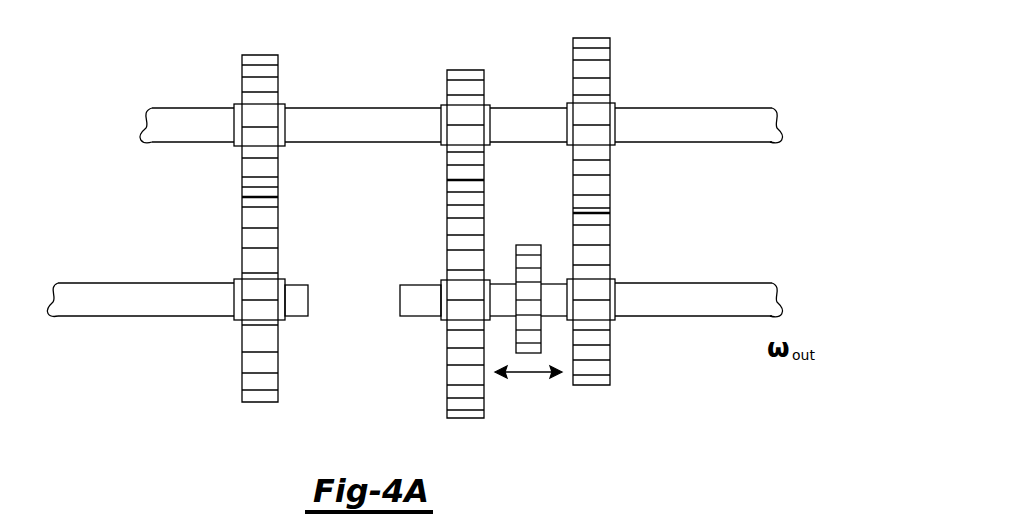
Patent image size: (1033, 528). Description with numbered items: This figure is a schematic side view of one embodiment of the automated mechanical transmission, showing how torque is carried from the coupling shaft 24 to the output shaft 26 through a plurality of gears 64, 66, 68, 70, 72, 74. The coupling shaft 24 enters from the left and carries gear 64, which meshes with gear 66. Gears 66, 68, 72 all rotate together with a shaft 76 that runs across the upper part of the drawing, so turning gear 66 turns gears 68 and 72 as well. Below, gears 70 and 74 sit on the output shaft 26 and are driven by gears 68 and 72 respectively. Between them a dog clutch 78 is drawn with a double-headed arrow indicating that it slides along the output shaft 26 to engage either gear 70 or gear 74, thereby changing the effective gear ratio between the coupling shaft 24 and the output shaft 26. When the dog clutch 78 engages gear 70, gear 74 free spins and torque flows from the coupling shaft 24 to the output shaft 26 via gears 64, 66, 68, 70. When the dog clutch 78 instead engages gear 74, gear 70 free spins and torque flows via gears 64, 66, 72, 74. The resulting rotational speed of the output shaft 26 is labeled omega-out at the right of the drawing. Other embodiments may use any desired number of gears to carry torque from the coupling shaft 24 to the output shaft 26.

The coupling shaft 24 is at (135, 283).
The output shaft 26 is at (748, 283).
The gear 64 is at (278, 232).
The gear 66 is at (278, 72).
The gear 68 is at (484, 82).
The gear 70 is at (447, 193).
The gear 72 is at (610, 55).
The gear 74 is at (610, 230).
The shaft 76 is at (723, 108).
The dog clutch 78 is at (531, 245).